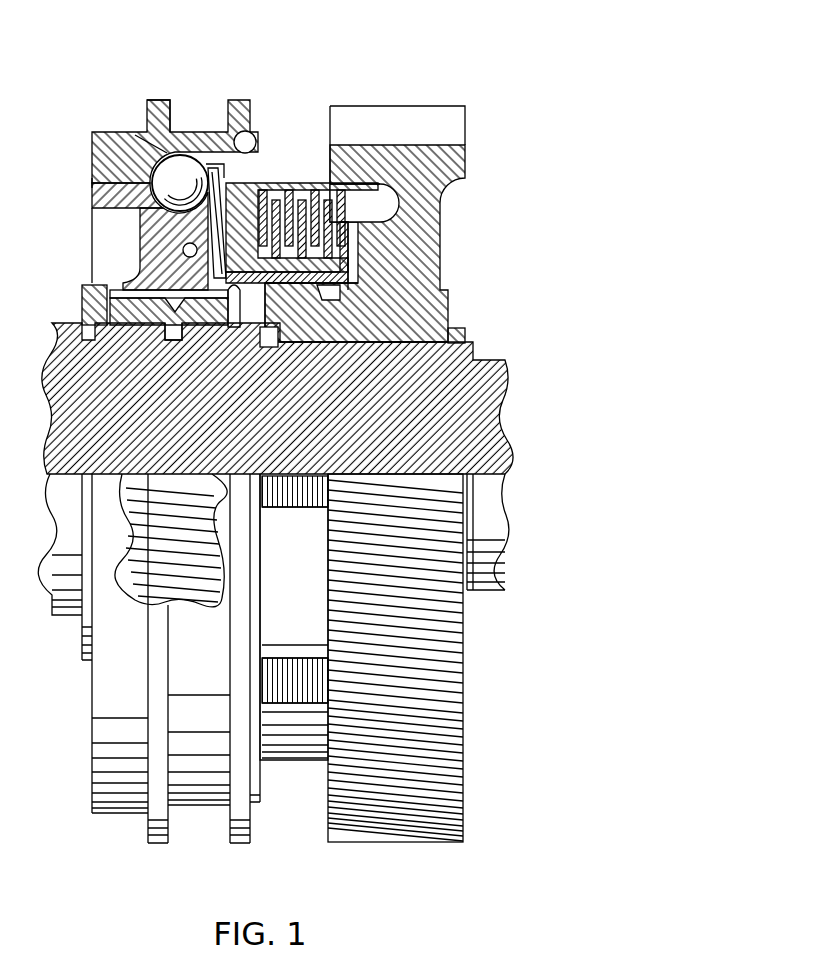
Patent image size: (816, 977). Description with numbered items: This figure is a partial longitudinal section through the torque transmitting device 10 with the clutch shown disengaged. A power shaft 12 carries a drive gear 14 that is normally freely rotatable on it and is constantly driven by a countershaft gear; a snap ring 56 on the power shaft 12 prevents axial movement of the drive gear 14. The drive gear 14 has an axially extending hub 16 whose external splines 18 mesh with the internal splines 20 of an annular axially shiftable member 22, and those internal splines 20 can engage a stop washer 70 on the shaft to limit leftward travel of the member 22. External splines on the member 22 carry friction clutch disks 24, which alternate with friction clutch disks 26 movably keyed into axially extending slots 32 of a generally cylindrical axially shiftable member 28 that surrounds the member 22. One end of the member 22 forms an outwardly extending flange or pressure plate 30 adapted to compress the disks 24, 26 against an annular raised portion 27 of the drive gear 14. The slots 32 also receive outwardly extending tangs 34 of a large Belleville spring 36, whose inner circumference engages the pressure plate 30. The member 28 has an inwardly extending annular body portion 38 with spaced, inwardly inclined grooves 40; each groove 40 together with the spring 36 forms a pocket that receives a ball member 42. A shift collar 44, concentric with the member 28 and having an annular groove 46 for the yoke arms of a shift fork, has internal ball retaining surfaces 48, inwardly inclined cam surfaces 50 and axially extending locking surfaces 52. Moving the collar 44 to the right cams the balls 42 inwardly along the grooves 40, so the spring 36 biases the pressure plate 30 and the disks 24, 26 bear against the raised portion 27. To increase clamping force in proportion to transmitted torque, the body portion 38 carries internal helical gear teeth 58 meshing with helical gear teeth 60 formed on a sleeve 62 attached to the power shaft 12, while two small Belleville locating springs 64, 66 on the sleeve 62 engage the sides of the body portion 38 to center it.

The torque transmitting device 10 is at (452, 57).
The power shaft 12 is at (277, 398).
The drive gear 14 is at (365, 224).
The hub 16 is at (308, 338).
The external splines 18 is at (286, 294).
The internal splines 20 is at (329, 298).
The axially shiftable member 22 is at (336, 277).
The friction clutch disks 24 is at (277, 200).
The friction clutch disks 26 is at (325, 200).
The annular raised portion 27 is at (351, 232).
The axially shiftable member 28 is at (92, 198).
The pressure plate 30 is at (238, 222).
The slots 32 is at (348, 190).
The tangs 34 is at (220, 174).
The Belleville spring 36 is at (213, 243).
The annular body portion 38 is at (136, 275).
The grooves 40 is at (184, 256).
The ball member 42 is at (181, 162).
The shift collar 44 is at (127, 134).
The annular groove 46 is at (216, 134).
The ball retaining surfaces 48 is at (254, 132).
The cam surfaces 50 is at (156, 170).
The locking surfaces 52 is at (92, 186).
The snap ring 56 is at (465, 338).
The internal helical gear teeth 58 is at (170, 299).
The helical gear teeth 60 is at (187, 304).
The sleeve 62 is at (183, 331).
The Belleville locating spring 64 is at (100, 330).
The Belleville locating spring 66 is at (235, 328).
The stop washer 70 is at (267, 347).